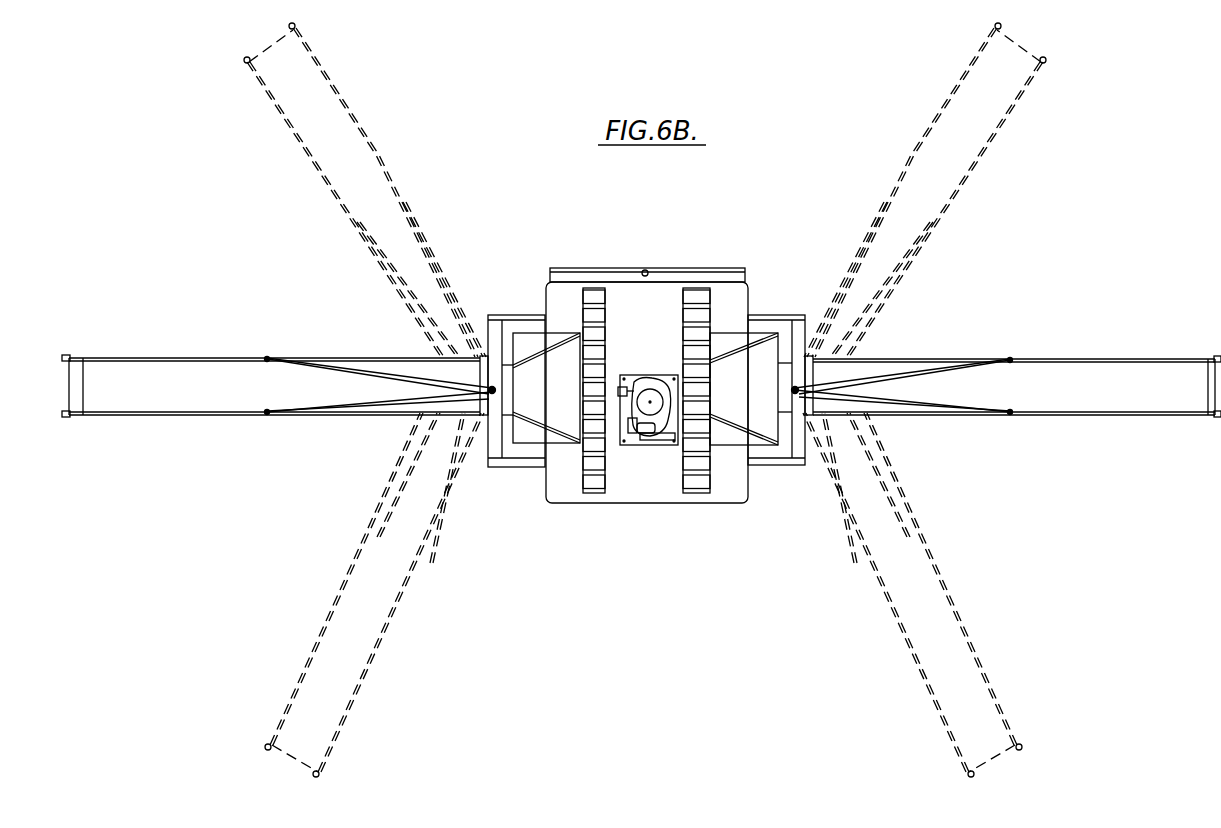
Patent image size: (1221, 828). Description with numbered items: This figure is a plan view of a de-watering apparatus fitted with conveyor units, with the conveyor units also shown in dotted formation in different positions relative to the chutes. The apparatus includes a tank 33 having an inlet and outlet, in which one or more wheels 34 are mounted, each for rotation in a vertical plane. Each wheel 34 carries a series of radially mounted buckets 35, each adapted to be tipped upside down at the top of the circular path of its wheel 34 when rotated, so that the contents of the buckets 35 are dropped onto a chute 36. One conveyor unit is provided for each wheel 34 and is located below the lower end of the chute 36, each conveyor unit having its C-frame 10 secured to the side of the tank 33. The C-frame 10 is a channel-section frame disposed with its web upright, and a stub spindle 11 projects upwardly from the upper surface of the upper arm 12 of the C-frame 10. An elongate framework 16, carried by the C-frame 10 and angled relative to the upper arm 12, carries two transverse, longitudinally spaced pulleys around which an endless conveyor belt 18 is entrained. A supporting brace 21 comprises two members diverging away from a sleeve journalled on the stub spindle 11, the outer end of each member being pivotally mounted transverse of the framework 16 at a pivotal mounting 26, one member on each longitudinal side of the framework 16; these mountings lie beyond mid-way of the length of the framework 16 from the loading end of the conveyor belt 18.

The C-frame 10 is at (526, 466).
The stub spindle 11 is at (483, 400).
The upper arm 12 is at (495, 449).
The elongate framework 16 is at (163, 357).
The endless conveyor belt 18 is at (641, 400).
The supporting brace 21 is at (393, 378).
The pivotal mounting 26 is at (267, 358).
The tank 33 is at (567, 483).
The wheel 34 is at (610, 310).
The bucket 35 is at (582, 328).
The chute 36 is at (552, 365).